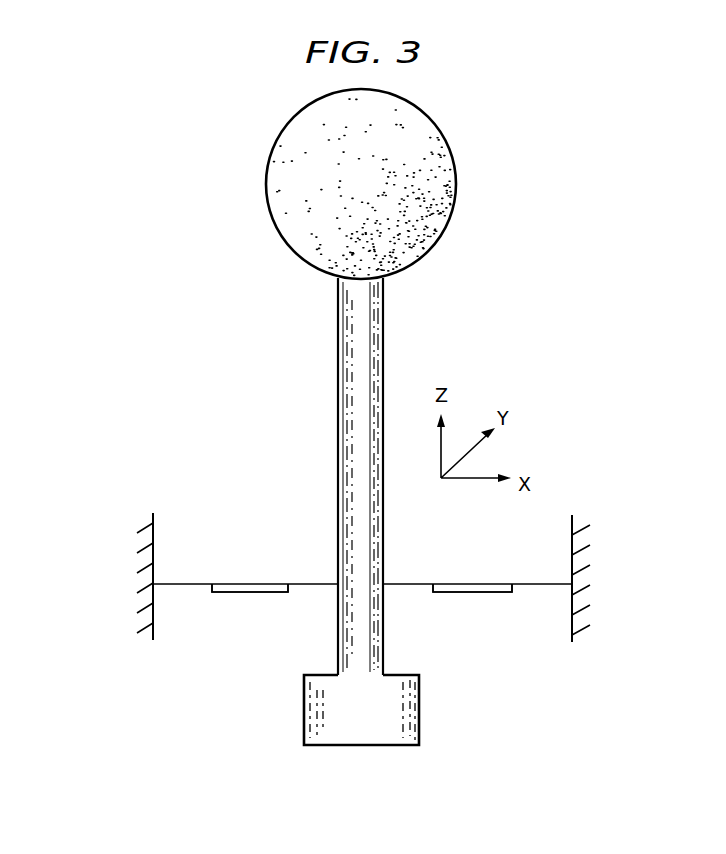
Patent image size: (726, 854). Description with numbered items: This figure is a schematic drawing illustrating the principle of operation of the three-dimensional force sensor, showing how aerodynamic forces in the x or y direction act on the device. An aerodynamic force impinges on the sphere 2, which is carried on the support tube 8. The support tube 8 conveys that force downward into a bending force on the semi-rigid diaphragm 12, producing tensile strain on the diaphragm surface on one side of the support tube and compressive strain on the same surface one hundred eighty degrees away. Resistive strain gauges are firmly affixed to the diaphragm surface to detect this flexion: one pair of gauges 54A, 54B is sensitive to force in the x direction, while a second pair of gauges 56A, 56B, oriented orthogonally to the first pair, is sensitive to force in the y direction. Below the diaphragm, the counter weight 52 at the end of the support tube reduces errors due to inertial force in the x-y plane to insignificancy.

The sphere 2 is at (451, 154).
The support tube 8 is at (338, 398).
The semi-rigid diaphragm 12 is at (312, 584).
The counter weight 52 is at (398, 675).
The resistive strain gauge 54A is at (230, 601).
The resistive strain gauge 56A is at (164, 669).
The resistive strain gauge 54B is at (478, 602).
The resistive strain gauge 56B is at (559, 669).